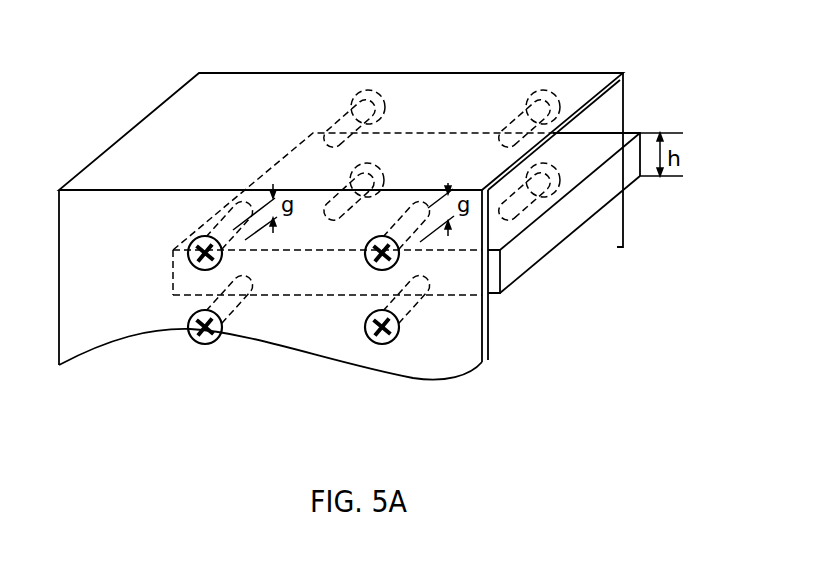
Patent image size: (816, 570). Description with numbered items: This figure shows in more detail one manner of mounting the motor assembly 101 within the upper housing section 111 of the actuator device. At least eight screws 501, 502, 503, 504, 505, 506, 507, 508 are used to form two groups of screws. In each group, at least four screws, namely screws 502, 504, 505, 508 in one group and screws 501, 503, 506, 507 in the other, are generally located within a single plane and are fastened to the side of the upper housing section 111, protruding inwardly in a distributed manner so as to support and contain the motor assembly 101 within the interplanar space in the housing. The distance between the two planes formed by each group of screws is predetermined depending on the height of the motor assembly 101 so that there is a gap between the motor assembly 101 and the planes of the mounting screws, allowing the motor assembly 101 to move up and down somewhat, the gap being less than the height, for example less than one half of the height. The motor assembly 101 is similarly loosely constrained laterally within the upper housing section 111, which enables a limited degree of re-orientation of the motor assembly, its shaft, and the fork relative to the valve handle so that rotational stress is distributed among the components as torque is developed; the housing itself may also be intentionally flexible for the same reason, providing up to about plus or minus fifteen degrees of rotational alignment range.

The upper housing section 111 is at (428, 76).
The motor assembly 101 is at (555, 232).
The screw 501 is at (526, 103).
The screw 502 is at (527, 176).
The screw 503 is at (351, 102).
The screw 504 is at (350, 176).
The screw 505 is at (367, 314).
The screw 506 is at (368, 270).
The screw 507 is at (190, 243).
The screw 508 is at (192, 312).